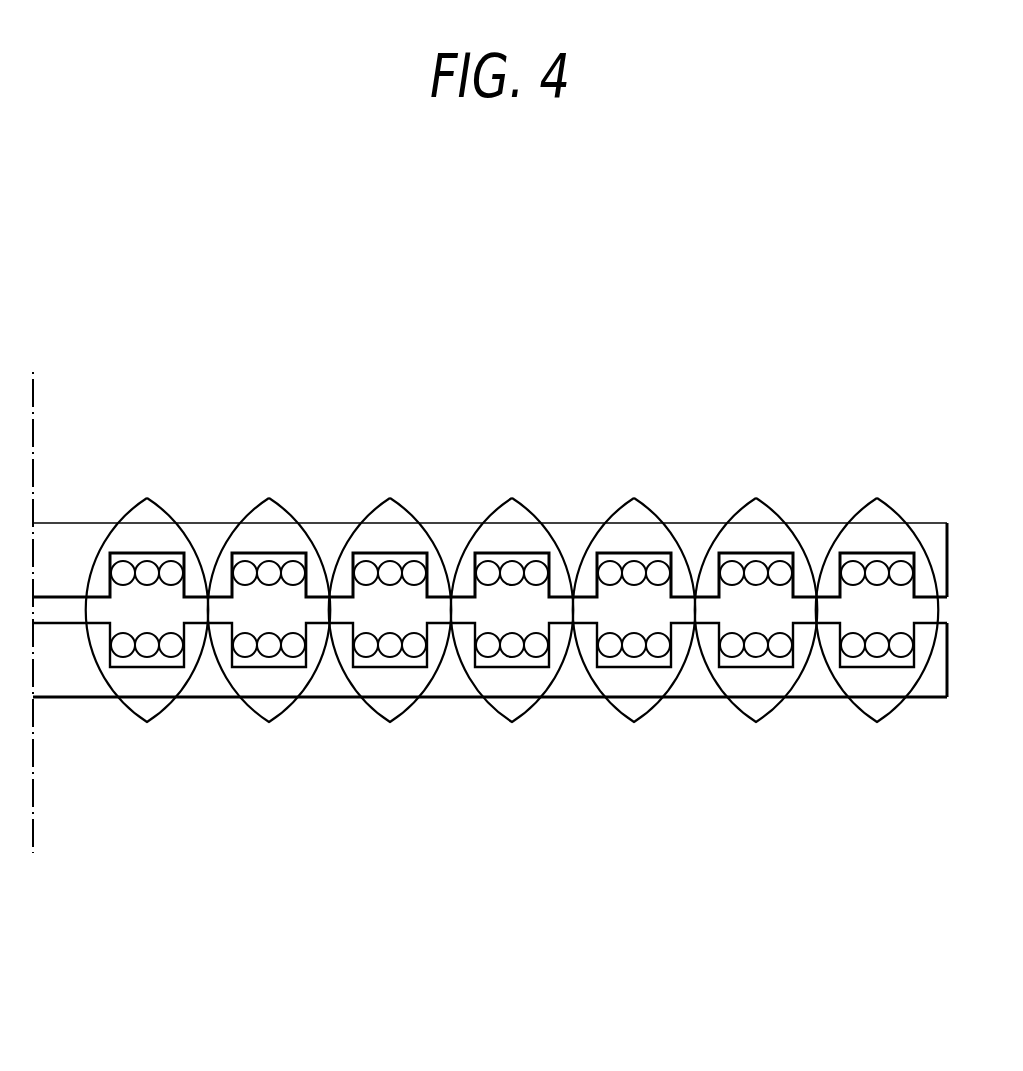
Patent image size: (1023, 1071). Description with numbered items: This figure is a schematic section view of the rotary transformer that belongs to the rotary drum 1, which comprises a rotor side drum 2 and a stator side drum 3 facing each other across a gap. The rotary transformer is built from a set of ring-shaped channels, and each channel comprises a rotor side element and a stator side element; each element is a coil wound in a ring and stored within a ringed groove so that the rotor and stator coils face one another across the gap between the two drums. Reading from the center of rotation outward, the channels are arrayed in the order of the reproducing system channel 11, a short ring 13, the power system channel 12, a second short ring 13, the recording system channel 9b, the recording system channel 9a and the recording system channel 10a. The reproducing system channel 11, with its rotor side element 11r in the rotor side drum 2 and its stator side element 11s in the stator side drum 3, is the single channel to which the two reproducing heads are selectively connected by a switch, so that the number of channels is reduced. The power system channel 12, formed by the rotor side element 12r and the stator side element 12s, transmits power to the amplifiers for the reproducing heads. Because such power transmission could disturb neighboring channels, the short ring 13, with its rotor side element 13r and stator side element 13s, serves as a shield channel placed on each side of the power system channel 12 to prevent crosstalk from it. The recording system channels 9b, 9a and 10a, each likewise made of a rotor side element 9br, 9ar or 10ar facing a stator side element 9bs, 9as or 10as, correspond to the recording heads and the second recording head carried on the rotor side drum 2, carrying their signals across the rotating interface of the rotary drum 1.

The rotary drum 1 is at (828, 325).
The rotor side drum 2 is at (938, 558).
The stator side drum 3 is at (938, 657).
The recording system channel 9a is at (756, 722).
The rotor side element of recording system channel 9a 9ar is at (756, 572).
The stator side element of recording system channel 9a 9as is at (756, 648).
The recording system channel 9b is at (634, 722).
The rotor side element of recording system channel 9b 9br is at (634, 572).
The stator side element of recording system channel 9b 9bs is at (634, 648).
The recording system channel 10a is at (877, 722).
The rotor side element of recording system channel 10a 10ar is at (877, 572).
The stator side element of recording system channel 10a 10as is at (877, 648).
The reproducing system channel 11 is at (147, 722).
The rotor side element of reproducing system channel 11r is at (147, 572).
The stator side element of reproducing system channel 11s is at (147, 648).
The power system channel 12 is at (390, 722).
The rotor side element of power system channel 12r is at (390, 572).
The stator side element of power system channel 12s is at (390, 648).
The short ring 13 is at (269, 722).
The rotor side element of short ring 13r is at (269, 572).
The stator side element of short ring 13s is at (269, 648).